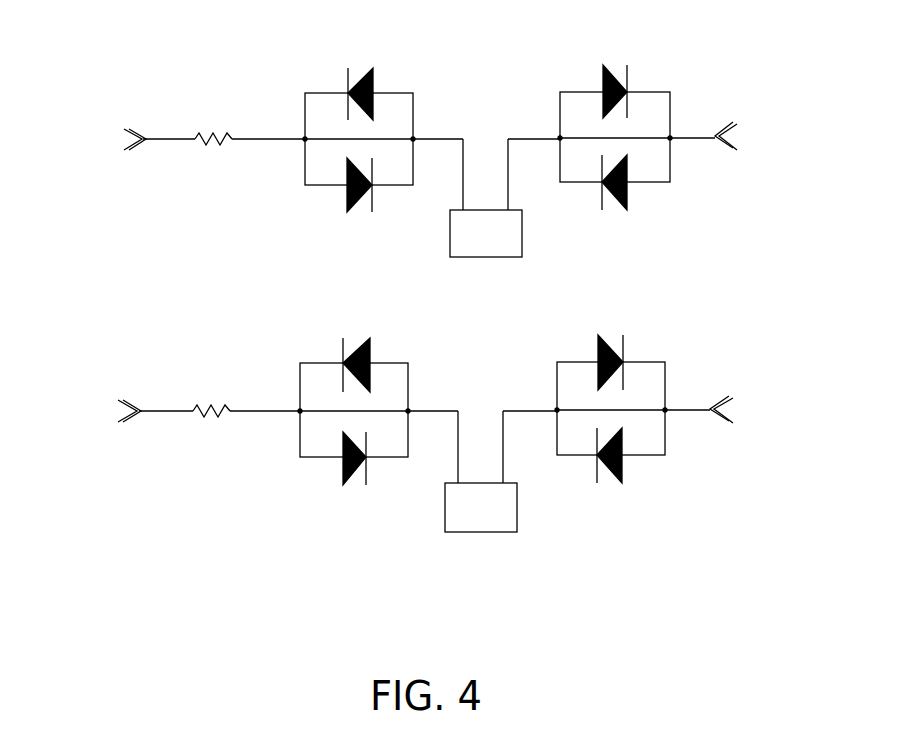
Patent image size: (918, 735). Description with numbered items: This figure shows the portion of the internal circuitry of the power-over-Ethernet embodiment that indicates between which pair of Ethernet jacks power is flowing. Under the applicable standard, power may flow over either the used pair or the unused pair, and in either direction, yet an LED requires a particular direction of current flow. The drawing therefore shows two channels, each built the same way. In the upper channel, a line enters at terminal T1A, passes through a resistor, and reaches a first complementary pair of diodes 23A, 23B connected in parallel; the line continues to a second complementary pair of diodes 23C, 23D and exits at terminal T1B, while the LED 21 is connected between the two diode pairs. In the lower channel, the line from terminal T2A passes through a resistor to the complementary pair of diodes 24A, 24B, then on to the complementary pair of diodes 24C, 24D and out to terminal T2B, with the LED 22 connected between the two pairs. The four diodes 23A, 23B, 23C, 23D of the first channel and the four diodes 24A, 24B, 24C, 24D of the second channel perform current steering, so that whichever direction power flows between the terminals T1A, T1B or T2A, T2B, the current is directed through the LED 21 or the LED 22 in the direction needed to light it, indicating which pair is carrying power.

The diode 23A is at (370, 42).
The diode 23B is at (352, 210).
The diode 23C is at (606, 65).
The diode 23D is at (628, 210).
The LED 21 is at (490, 258).
The diode 24A is at (353, 340).
The diode 24B is at (351, 484).
The diode 24C is at (600, 345).
The diode 24D is at (623, 482).
The LED 22 is at (490, 533).
The Terminal T1A is at (93, 145).
The Terminal T1B is at (739, 135).
The Terminal T2A is at (94, 414).
The Terminal T2B is at (732, 408).